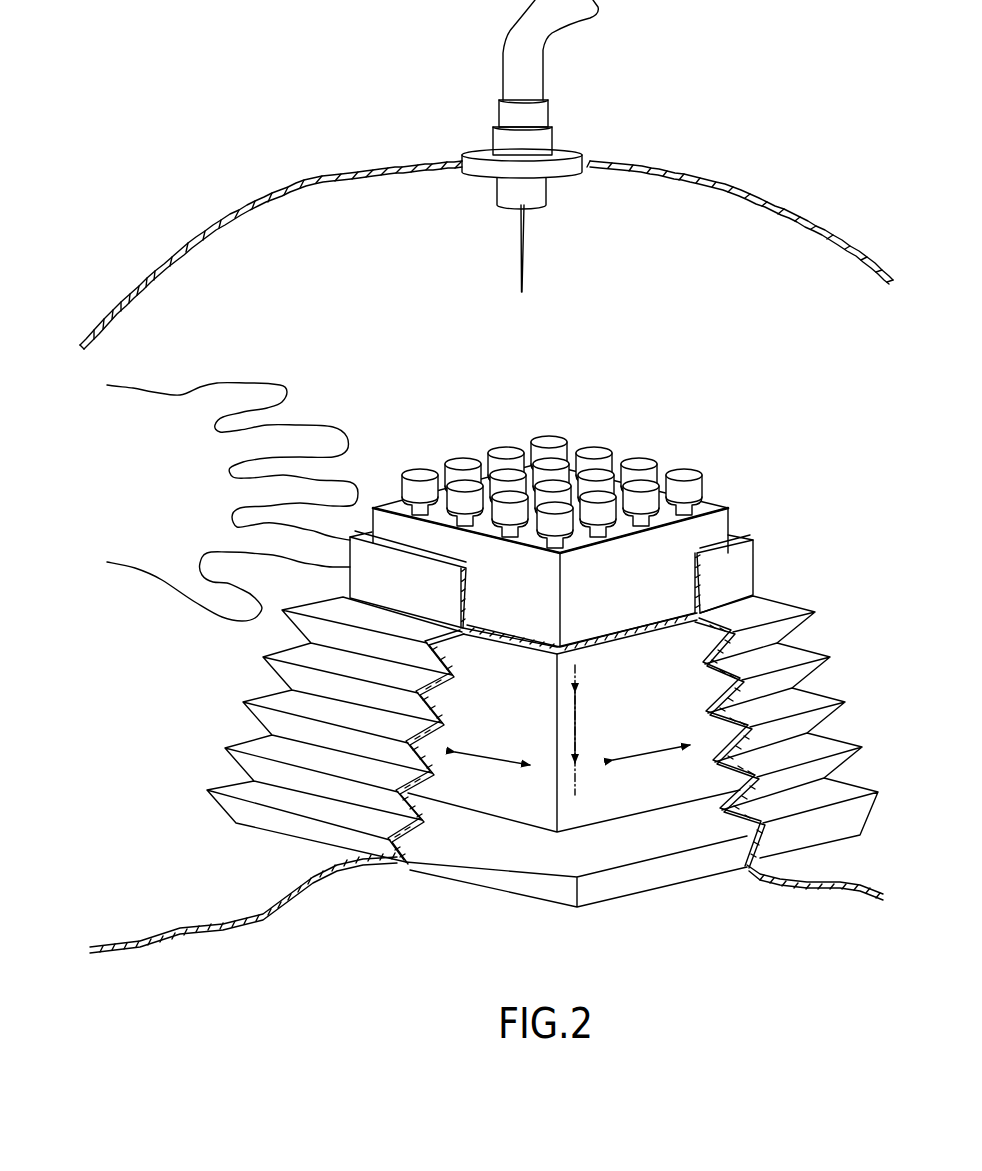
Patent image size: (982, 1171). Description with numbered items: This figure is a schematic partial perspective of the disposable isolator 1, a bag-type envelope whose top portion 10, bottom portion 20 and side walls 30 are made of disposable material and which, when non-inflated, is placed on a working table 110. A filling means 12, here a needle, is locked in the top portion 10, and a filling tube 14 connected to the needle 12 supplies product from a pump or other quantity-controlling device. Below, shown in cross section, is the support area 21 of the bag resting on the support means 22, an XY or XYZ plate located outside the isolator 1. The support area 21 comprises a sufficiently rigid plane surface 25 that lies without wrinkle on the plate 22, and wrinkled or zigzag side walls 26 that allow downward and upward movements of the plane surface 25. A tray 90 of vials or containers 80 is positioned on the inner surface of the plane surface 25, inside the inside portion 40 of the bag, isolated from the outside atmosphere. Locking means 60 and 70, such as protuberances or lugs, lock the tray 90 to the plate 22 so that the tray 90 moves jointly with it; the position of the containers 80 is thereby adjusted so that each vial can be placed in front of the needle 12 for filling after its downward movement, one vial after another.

The disposable isolator 1 is at (257, 84).
The top portion 10 is at (692, 164).
The filling means 12 is at (476, 132).
The filling tube 14 is at (542, 54).
The bottom portion 20 is at (316, 905).
The support area 21 is at (208, 768).
The support means 22 is at (596, 765).
The plane surface 25 is at (623, 633).
The zigzag side walls 26 is at (830, 657).
The side walls 30 is at (92, 321).
The inside portion 40 is at (672, 396).
The locking means 60 is at (462, 645).
The locking means 70 is at (746, 572).
The containers 80 is at (637, 455).
The tray 90 is at (722, 527).
The working table 110 is at (181, 407).